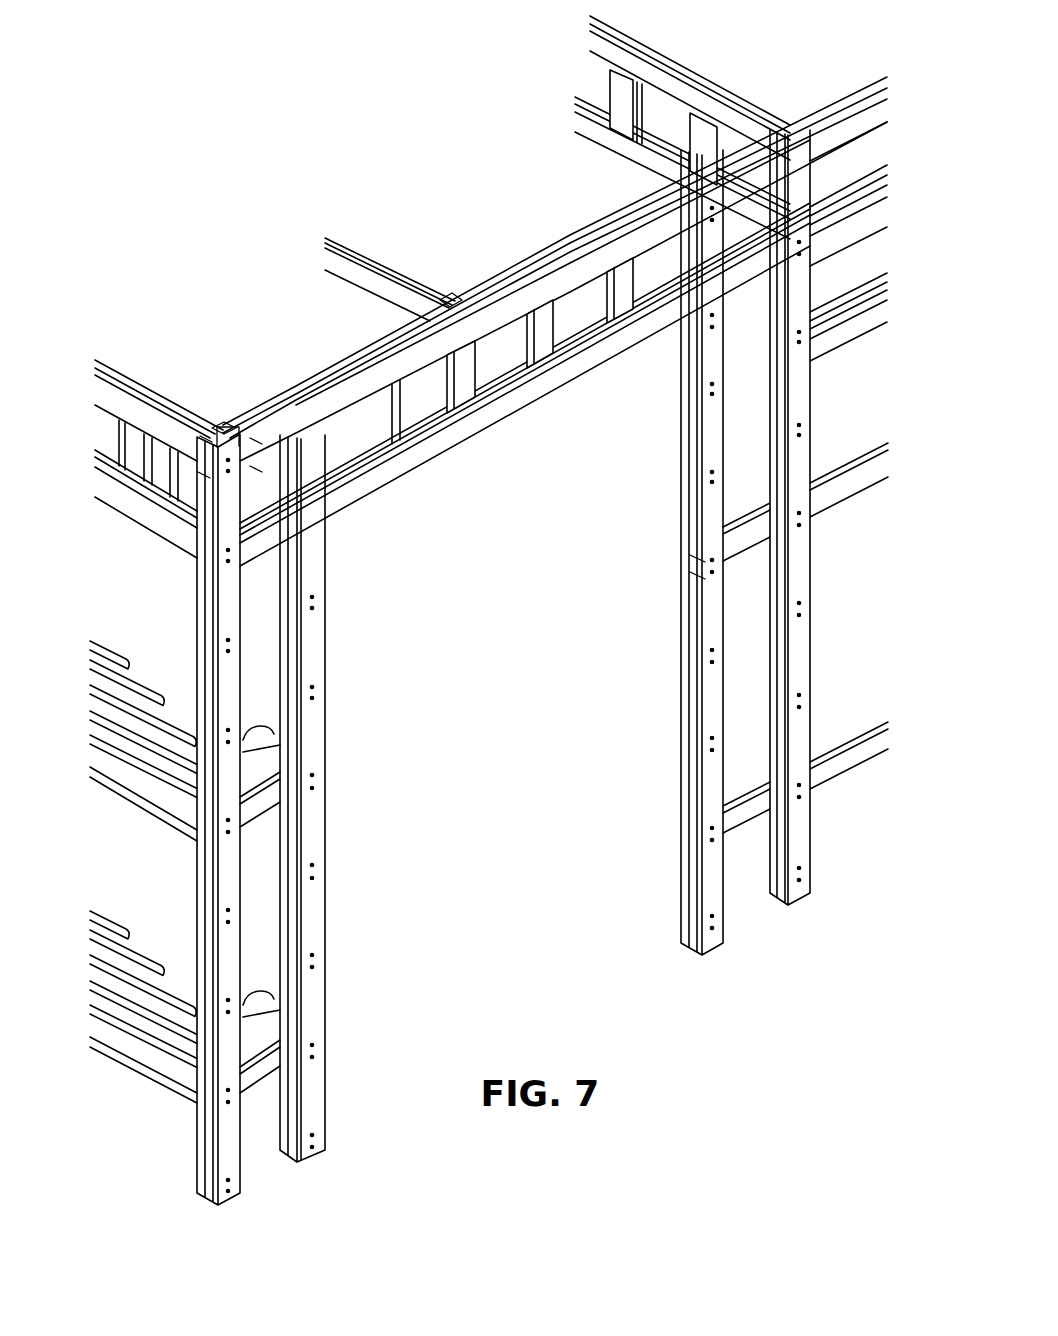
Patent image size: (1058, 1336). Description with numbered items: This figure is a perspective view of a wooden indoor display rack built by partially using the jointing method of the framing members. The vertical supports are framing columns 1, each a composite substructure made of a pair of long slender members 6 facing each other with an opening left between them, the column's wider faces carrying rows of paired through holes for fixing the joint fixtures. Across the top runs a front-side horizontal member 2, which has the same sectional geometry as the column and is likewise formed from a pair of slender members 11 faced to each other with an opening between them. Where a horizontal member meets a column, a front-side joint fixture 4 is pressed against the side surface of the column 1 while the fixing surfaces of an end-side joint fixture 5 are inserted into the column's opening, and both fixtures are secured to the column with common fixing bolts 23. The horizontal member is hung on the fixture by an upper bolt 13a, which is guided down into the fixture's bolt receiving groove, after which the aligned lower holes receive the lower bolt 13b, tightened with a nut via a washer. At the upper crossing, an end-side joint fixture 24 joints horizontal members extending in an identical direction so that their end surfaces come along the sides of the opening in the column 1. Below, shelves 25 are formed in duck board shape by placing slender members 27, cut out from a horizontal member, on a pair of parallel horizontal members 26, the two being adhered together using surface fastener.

The framing column 1 is at (808, 458).
The front-side horizontal member 2 is at (405, 265).
The front-side joint fixture 4 is at (446, 300).
The end-side joint fixture 5 is at (236, 428).
The slender member 6 is at (380, 410).
The slender member 11 is at (370, 255).
The upper bolt 13a is at (210, 432).
The lower bolt 13b is at (200, 475).
The common fixing bolt 23 is at (200, 478).
The end-side joint fixture 24 is at (790, 128).
The shelf 25 is at (148, 652).
The horizontal member 26 is at (118, 763).
The slender member 27 is at (163, 940).